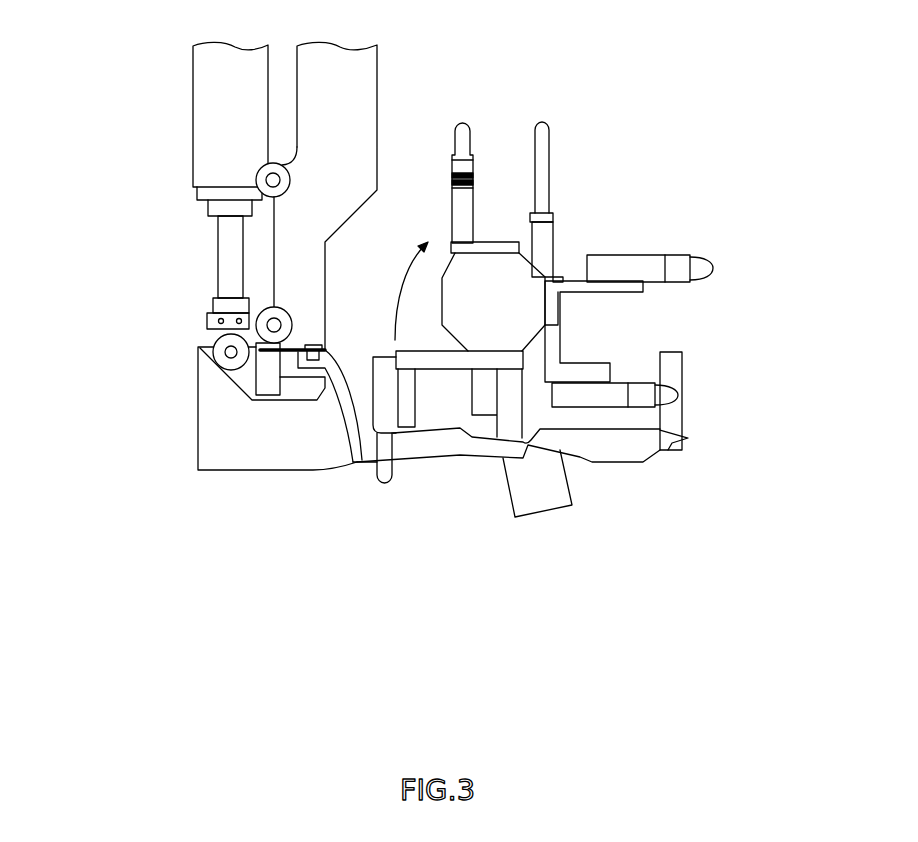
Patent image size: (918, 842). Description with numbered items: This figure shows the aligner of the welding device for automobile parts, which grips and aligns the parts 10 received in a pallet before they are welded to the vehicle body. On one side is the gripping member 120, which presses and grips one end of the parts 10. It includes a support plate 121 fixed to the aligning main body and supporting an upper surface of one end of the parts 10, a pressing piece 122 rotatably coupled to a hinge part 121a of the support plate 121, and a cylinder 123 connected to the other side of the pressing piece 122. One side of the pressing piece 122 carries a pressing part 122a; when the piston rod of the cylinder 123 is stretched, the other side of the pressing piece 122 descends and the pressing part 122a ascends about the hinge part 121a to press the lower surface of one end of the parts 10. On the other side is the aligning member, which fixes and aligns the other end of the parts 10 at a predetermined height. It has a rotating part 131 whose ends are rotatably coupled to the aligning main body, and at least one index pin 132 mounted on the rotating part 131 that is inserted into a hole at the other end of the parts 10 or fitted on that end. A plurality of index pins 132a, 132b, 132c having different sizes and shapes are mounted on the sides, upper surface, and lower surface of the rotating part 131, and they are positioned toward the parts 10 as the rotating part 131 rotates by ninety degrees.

The parts 10 is at (570, 495).
The gripping member 120 is at (60, 175).
The support plate 121 is at (295, 237).
The hinge part 121a is at (275, 333).
The pressing piece 122 is at (263, 378).
The pressing part 122a is at (317, 392).
The cylinder 123 is at (203, 132).
The rotating part 131 is at (497, 278).
The index pin 132 is at (812, 237).
The index pin 132a is at (548, 227).
The index pin 132b is at (655, 278).
The index pin 132c is at (513, 388).